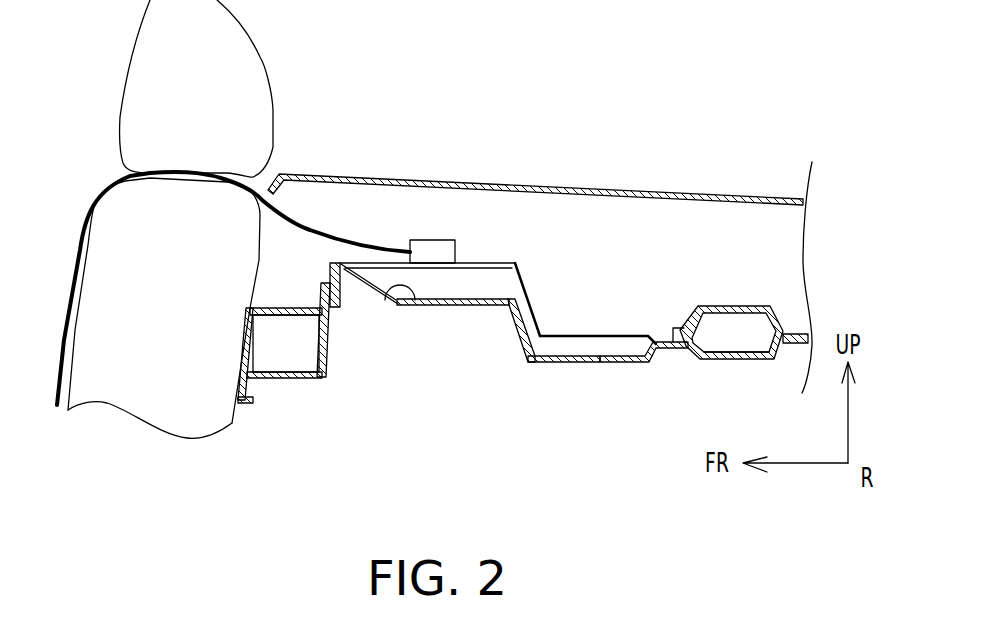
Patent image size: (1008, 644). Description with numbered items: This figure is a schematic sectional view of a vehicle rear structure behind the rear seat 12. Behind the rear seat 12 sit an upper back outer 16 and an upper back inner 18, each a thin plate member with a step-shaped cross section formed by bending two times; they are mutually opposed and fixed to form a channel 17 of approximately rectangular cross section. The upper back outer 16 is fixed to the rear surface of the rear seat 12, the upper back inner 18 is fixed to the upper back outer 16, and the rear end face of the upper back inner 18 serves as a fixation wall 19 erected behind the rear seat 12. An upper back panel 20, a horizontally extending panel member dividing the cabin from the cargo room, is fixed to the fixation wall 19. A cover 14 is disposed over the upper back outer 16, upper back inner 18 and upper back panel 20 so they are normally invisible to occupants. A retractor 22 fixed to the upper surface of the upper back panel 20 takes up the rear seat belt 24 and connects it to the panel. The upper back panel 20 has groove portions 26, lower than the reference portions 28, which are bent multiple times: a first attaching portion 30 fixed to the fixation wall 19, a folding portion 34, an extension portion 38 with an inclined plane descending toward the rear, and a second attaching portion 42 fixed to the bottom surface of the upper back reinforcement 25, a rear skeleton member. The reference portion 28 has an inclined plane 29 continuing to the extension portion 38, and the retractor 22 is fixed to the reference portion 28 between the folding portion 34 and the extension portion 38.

The rear seat 12 is at (138, 397).
The cover 14 is at (508, 186).
The upper back outer 16 is at (278, 307).
The channel 17 is at (272, 354).
The upper back inner 18 is at (285, 378).
The fixation wall 19 is at (327, 346).
The upper back panel 20 is at (598, 358).
The retractor 22 is at (427, 242).
The rear seat belt 24 is at (337, 258).
The upper back reinforcement 25 is at (740, 307).
The groove portion 26 is at (550, 362).
The reference portion 28 is at (587, 336).
The inclined plane 29 is at (525, 286).
The first attaching portion 30 is at (336, 242).
The folding portion 34 is at (410, 304).
The extension portion 38 is at (513, 326).
The second attaching portion 42 is at (732, 359).